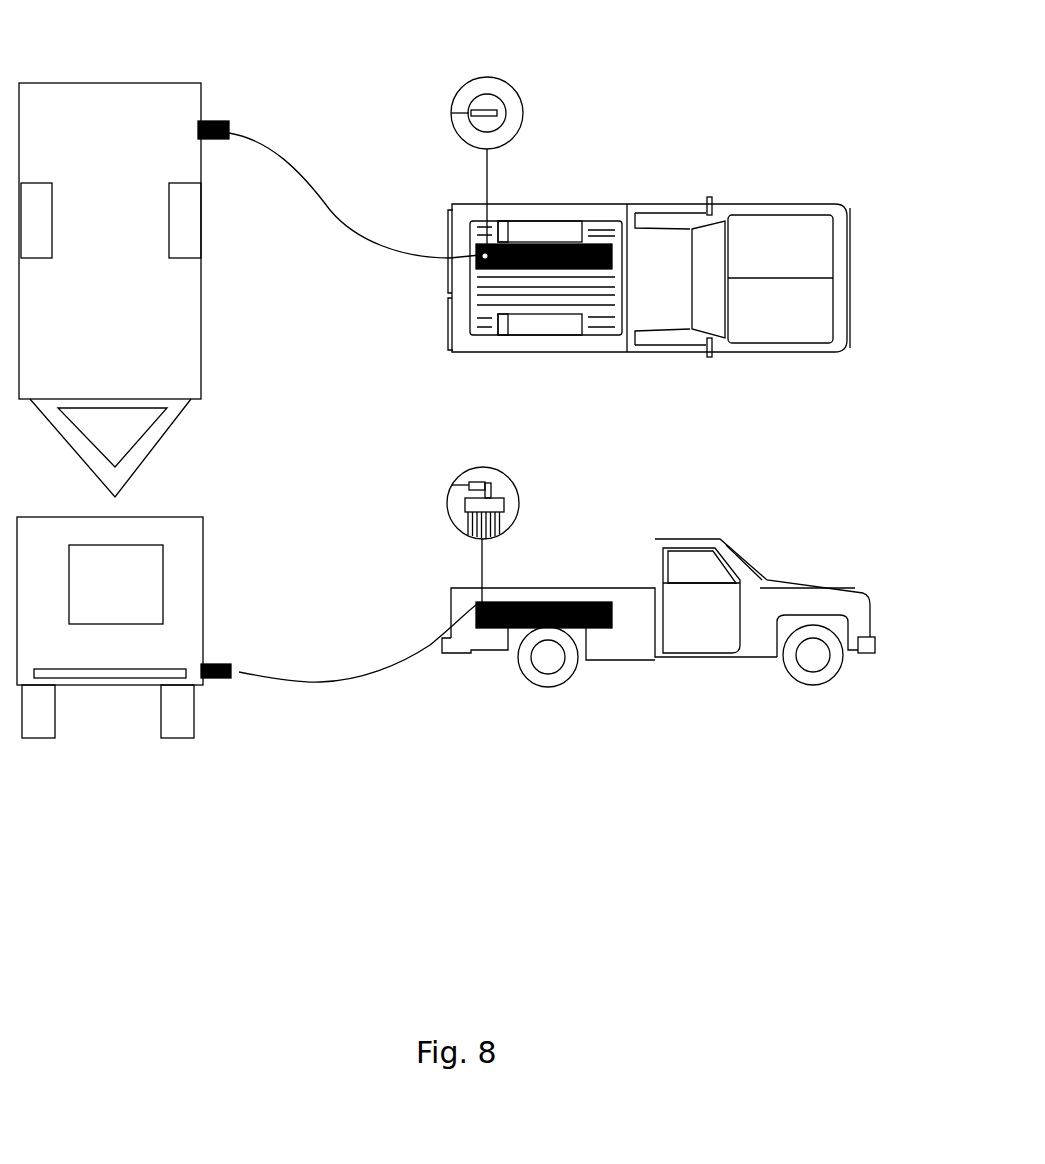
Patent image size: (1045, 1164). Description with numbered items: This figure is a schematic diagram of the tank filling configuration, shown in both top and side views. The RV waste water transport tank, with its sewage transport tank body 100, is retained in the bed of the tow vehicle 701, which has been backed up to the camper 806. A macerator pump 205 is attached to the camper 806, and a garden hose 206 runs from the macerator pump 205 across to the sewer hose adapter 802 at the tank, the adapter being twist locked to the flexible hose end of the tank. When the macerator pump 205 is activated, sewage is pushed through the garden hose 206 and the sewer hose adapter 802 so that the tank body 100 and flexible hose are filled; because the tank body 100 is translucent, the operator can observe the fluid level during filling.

The sewage transport tank body 100 is at (556, 273).
The macerator pump 205 is at (220, 115).
The garden hose 206 is at (290, 152).
The tow vehicle 701 is at (808, 532).
The sewer hose adapter 802 is at (474, 72).
The camper 806 is at (207, 495).